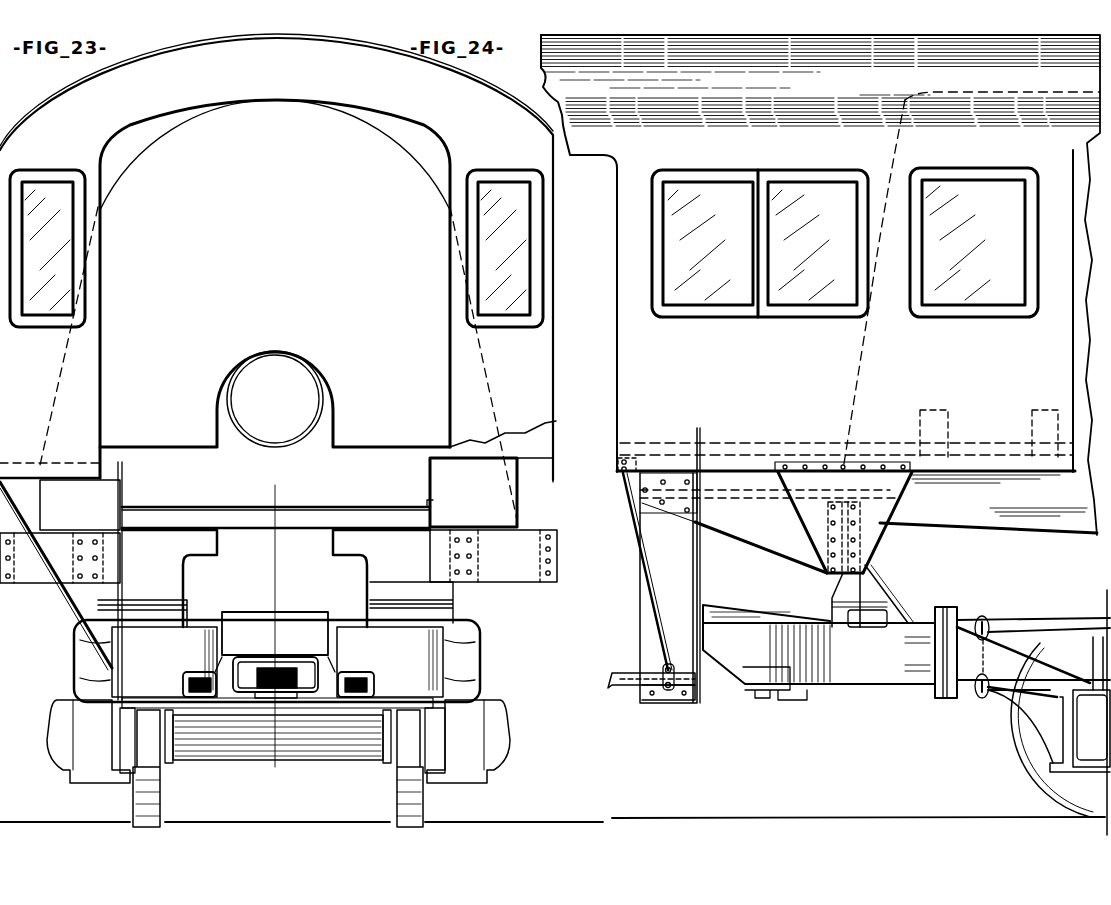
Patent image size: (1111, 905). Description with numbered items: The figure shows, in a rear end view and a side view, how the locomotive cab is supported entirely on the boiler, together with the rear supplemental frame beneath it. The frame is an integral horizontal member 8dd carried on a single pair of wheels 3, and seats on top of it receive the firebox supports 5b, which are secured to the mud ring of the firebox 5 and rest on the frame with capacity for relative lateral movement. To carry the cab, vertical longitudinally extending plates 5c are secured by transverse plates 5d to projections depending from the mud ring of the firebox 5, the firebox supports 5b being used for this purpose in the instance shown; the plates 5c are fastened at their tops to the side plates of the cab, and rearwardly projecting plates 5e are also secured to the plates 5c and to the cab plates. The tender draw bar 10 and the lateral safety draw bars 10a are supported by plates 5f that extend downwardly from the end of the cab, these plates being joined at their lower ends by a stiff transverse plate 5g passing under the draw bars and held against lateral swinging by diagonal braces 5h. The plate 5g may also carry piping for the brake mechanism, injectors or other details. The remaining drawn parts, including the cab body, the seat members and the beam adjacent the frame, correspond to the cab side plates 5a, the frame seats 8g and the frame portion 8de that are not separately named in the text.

In FIG. 23, the firebox 5 is at (277, 609).
In FIG. 24, the firebox 5 is at (987, 520).
In FIG. 23, the car body 5a is at (278, 277).
In FIG. 24, the car body 5a is at (820, 285).
In FIG. 23, the firebox supports 5b is at (276, 578).
In FIG. 24, the firebox supports 5b is at (862, 590).
In FIG. 23, the vertical longitudinally extending plates 5c is at (556, 488).
In FIG. 24, the vertical longitudinally extending plates 5c is at (895, 503).
In FIG. 23, the transverse plates 5d is at (30, 590).
In FIG. 24, the transverse plates 5d is at (770, 493).
In FIG. 24, the rearwardly projecting plates 5e is at (762, 535).
In FIG. 23, the plates extending downwardly from the cab 5f is at (121, 594).
In FIG. 24, the plates extending downwardly from the cab 5f is at (648, 628).
In FIG. 23, the stiff transverse plate 5g is at (227, 703).
In FIG. 23, the diagonal braces 5h is at (72, 605).
In FIG. 24, the diagonal braces 5h is at (652, 582).
In FIG. 23, the hanger bracket 8g is at (393, 603).
In FIG. 24, the hanger bracket 8g is at (829, 599).
In FIG. 23, the motor housing / beam 8de is at (470, 656).
In FIG. 24, the motor housing / beam 8de is at (850, 667).
In FIG. 24, the integral horizontal member of the rear supplemental frame 8dd is at (1030, 618).
In FIG. 23, the tender draw bar 10 is at (265, 668).
In FIG. 24, the tender draw bar 10 is at (632, 674).
In FIG. 23, the lateral safety draw bars 10a is at (189, 683).
In FIG. 24, the lateral safety draw bars 10a is at (715, 685).
In FIG. 23, the wheels 3 is at (150, 790).
In FIG. 24, the wheels 3 is at (1030, 772).